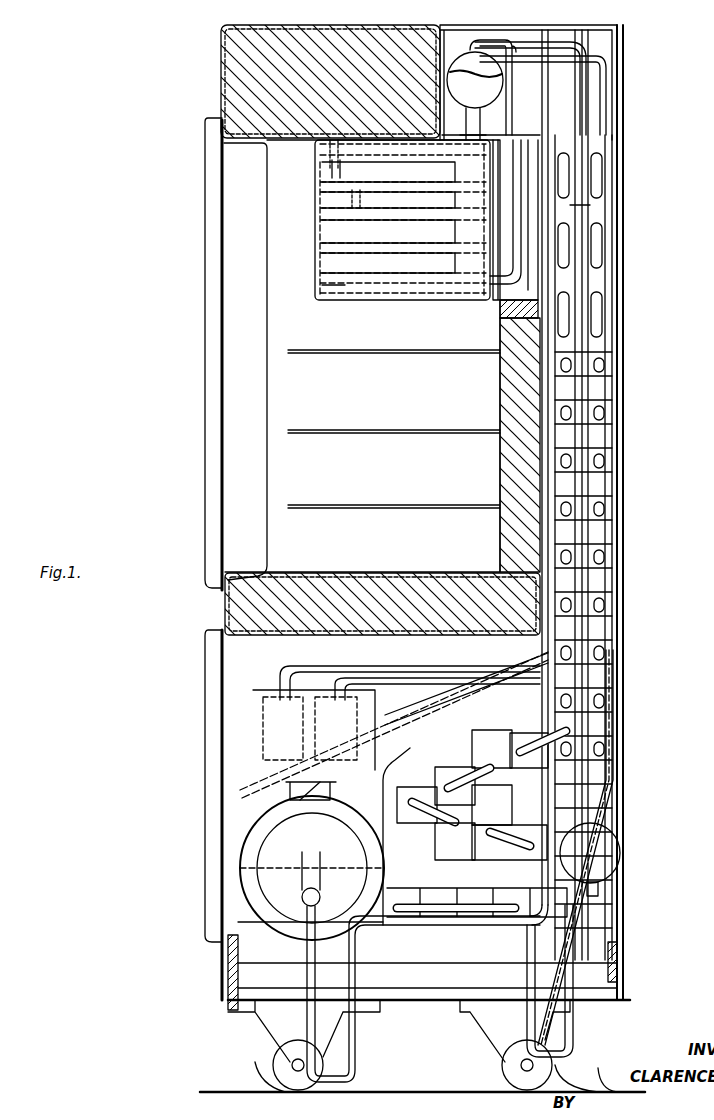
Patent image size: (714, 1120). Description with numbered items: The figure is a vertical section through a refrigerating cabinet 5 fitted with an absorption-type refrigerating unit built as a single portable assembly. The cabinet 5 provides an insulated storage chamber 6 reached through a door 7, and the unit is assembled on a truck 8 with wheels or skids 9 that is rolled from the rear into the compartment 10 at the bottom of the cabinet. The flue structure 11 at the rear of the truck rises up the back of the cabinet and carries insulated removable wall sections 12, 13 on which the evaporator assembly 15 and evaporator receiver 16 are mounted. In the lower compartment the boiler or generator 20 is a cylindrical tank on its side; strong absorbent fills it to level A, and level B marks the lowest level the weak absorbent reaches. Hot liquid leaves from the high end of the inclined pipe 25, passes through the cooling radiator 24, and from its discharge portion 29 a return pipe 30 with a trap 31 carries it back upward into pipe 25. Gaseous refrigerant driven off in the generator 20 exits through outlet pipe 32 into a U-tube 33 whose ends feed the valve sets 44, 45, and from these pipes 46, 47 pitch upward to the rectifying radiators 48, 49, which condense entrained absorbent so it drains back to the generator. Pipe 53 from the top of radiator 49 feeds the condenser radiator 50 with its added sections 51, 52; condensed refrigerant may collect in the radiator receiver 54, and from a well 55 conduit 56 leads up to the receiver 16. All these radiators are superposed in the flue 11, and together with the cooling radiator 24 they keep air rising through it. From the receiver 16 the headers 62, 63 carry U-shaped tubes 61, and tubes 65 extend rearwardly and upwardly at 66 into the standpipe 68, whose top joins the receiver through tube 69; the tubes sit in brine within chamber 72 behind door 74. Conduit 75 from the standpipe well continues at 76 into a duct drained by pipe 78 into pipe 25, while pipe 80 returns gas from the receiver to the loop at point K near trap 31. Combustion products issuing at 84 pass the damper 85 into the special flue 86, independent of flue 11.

The cabinet 5 is at (220, 606).
The insulated storage chamber 6 is at (362, 356).
The door 7 is at (212, 450).
The truck 8 is at (625, 978).
The wheels or skids 9 is at (275, 1062).
The compartment 10 is at (245, 662).
The flue structure 11 is at (612, 435).
The removable section of cabinet wall 12 is at (498, 300).
The removable section of cabinet wall 13 is at (422, 512).
The evaporator assembly 15 is at (385, 300).
The evaporator receiver 16 is at (475, 80).
The boiler or generator 20 is at (270, 882).
The cooling radiator 24 is at (496, 888).
The inclined pipe 25 is at (322, 896).
The discharge portion 29 is at (566, 916).
The return pipe 30 is at (448, 928).
The trap 31 is at (568, 1034).
The outlet pipe 32 is at (328, 793).
The U-tube 33 is at (336, 782).
The valve set 44 is at (262, 757).
The valve set 45 is at (356, 734).
The pipe 46 is at (372, 660).
The pipe 47 is at (428, 670).
The rectifying radiator 48 is at (566, 153).
The rectifying radiator 49 is at (595, 205).
The condenser radiator 50 is at (598, 540).
The added condenser section 51 is at (480, 762).
The added condenser section 52 is at (463, 828).
The pipe 53 is at (615, 266).
The radiator receiver 54 is at (606, 852).
The well 55 is at (600, 888).
The conduit 56 is at (615, 760).
The U-shaped tube 61 is at (335, 192).
The header 62 is at (348, 222).
The header 63 is at (478, 136).
The tube 65 is at (328, 286).
The rearward upward extension 66 is at (520, 232).
The standpipe 68 is at (526, 250).
The tube 69 is at (500, 46).
The brine chamber 72 is at (322, 300).
The door 74 is at (328, 188).
The conduit 75 is at (455, 304).
The conduit extension 76 is at (560, 80).
The pipe 78 is at (556, 800).
The pipe 80 is at (582, 43).
The products of combustion outlet 84 is at (322, 806).
The damper 85 is at (300, 775).
The special flue 86 is at (492, 716).
The liquid level A is at (312, 828).
The lowest liquid level B is at (318, 853).
The point of connection K is at (525, 1032).